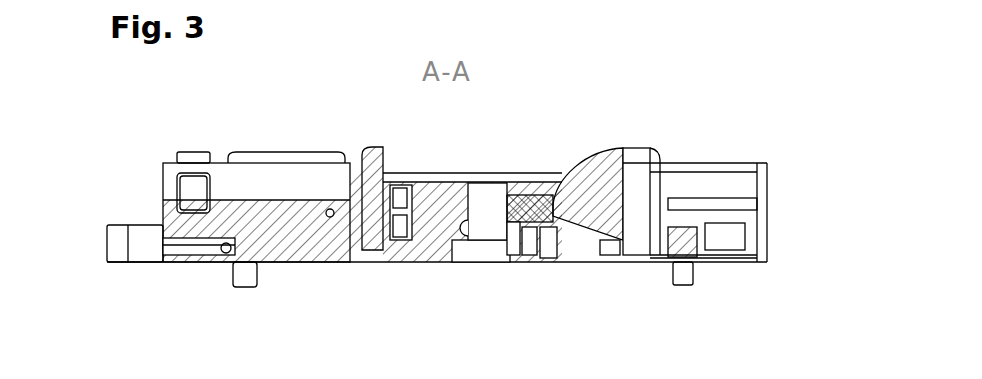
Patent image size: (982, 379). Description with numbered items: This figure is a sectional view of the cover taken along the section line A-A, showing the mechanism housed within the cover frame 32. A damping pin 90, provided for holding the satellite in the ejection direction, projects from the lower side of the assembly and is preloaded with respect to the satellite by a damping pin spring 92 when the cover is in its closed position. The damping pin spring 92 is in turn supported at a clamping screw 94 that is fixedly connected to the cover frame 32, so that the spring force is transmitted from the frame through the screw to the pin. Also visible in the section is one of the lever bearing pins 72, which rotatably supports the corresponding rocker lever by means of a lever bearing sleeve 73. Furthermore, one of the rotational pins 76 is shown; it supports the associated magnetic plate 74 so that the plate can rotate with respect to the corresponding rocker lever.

The cover frame 32 is at (761, 237).
The lever bearing pin 72 is at (525, 267).
The lever bearing sleeve 73 is at (612, 273).
The magnetic plate 74 is at (370, 148).
The rotational pin 76 is at (435, 268).
The damping pin 90 is at (747, 307).
The damping pin spring 92 is at (745, 262).
The clamping screw 94 is at (702, 205).